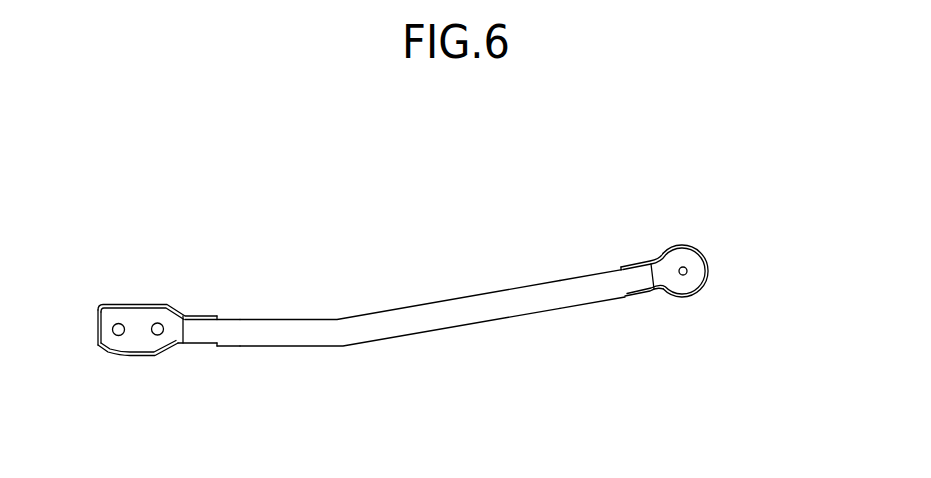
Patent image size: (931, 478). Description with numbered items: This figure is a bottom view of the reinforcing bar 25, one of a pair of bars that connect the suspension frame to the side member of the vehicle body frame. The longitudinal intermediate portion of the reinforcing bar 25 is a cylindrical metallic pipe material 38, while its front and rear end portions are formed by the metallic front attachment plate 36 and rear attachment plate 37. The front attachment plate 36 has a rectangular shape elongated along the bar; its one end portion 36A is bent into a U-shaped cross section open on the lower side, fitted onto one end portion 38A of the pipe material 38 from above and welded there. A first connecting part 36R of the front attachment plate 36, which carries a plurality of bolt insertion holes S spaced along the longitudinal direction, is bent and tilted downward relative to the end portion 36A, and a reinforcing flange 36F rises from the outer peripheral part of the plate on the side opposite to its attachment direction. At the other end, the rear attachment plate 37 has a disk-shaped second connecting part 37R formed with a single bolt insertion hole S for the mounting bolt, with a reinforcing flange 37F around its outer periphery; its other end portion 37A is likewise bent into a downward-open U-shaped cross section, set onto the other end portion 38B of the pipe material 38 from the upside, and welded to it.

The reinforcing bar 25 is at (415, 338).
The front attachment plate 36 is at (131, 346).
The first connecting part 36R is at (102, 345).
The reinforcing flange 36F is at (158, 353).
The one end portion of front attachment plate 36A is at (202, 350).
The rear attachment plate 37 is at (683, 280).
The other end portion of rear attachment plate 37A is at (637, 266).
The second connecting part 37R is at (693, 272).
The reinforcing flange 37F is at (695, 298).
The pipe material 38 is at (385, 323).
The one end portion of pipe material 38A is at (197, 326).
The other end portion of pipe material 38B is at (632, 283).
The bolt insertion hole S is at (118, 323).